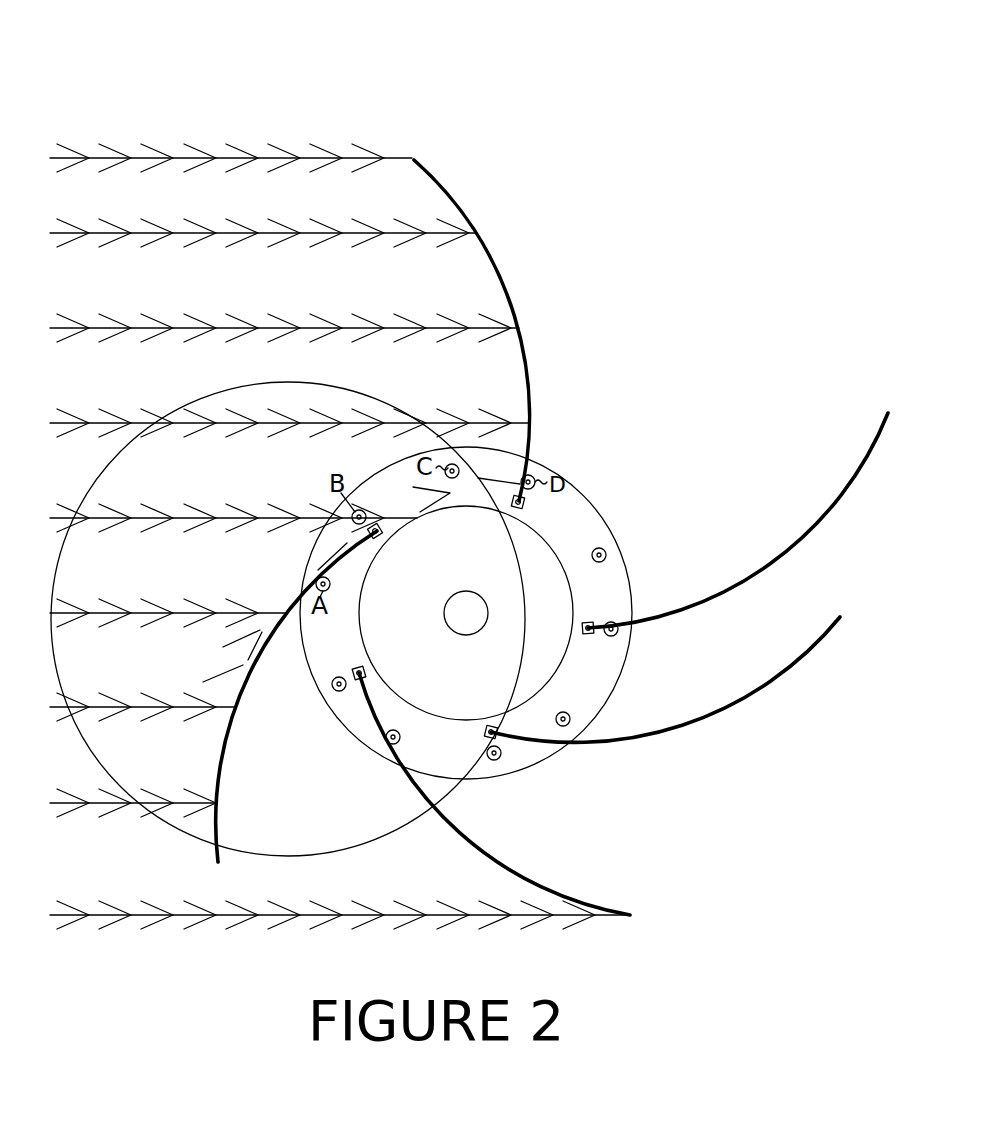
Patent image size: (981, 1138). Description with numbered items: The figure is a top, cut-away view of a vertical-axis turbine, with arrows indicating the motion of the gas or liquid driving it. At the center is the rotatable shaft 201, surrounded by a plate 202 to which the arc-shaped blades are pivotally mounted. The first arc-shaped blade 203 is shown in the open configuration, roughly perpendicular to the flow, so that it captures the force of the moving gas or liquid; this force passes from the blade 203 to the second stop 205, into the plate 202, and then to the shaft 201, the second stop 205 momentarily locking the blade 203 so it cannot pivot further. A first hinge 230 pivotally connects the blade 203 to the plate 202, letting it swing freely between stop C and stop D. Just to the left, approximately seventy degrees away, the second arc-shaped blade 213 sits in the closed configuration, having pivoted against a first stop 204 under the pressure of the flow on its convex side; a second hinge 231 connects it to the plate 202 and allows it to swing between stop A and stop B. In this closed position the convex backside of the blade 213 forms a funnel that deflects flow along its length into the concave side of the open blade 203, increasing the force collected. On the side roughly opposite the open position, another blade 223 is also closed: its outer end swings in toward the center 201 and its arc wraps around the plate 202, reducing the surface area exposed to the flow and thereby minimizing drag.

The rotatable shaft 201 is at (470, 615).
The plate 202 is at (573, 553).
The first arc-shaped blade 203 is at (500, 268).
The first stop 204 is at (329, 591).
The second stop 205 is at (533, 475).
The second arc-shaped blade 213 is at (225, 752).
The blade 223 is at (525, 880).
The first hinge 230 is at (523, 500).
The second hinge 231 is at (370, 533).